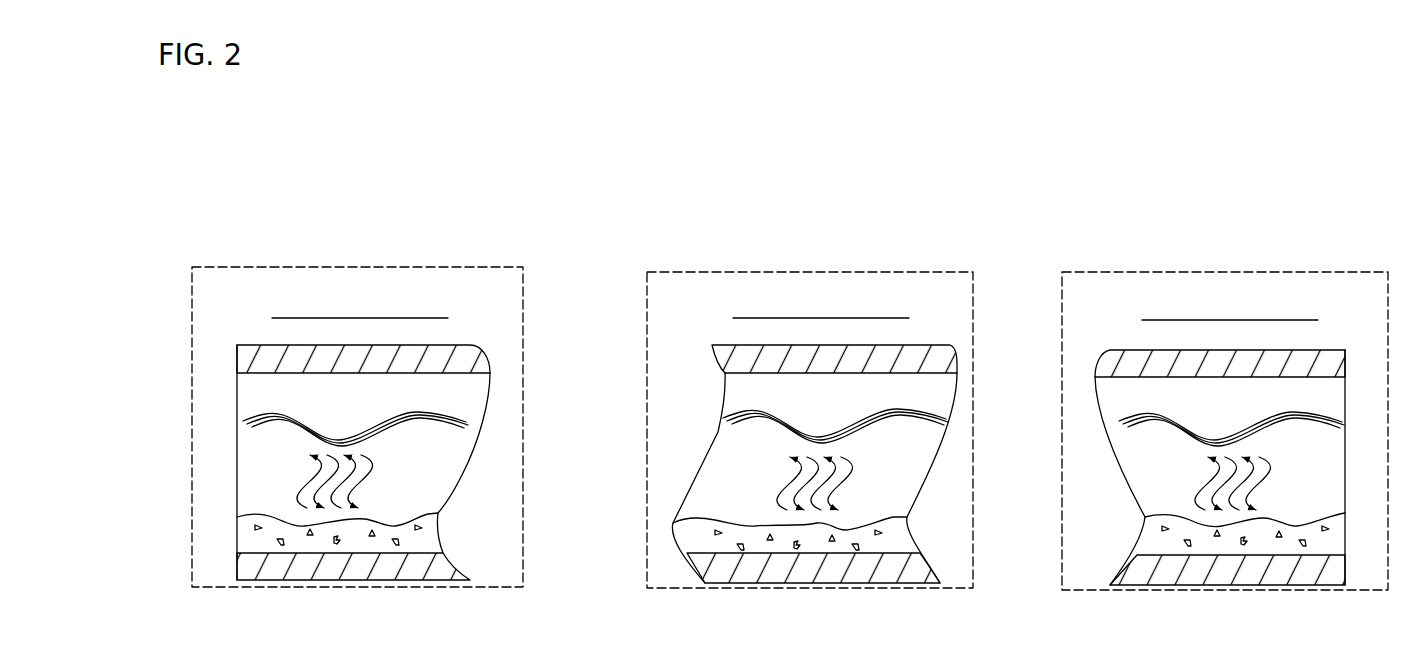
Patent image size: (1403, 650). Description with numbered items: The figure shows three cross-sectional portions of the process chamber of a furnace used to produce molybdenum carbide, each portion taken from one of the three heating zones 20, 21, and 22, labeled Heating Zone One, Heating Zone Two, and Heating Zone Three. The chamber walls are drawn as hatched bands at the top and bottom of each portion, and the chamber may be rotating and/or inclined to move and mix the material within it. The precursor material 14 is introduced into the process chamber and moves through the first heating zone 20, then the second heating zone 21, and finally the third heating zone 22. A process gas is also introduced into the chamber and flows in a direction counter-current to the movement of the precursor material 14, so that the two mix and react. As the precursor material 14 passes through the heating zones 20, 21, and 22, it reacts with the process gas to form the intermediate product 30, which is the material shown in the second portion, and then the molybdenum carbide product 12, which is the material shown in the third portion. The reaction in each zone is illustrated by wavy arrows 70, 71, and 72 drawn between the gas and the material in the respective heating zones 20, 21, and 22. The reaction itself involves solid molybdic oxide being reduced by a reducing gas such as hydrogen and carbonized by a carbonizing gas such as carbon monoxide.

The molybdenum carbide product 12 is at (1152, 527).
The precursor material 14 is at (262, 540).
The first heating zone 20 is at (237, 299).
The second heating zone 21 is at (688, 301).
The third heating zone 22 is at (1100, 300).
The intermediate product 30 is at (715, 534).
The reaction arrows in first heating zone 70 is at (362, 473).
The reaction arrows in second heating zone 71 is at (837, 490).
The reaction arrows in third heating zone 72 is at (1257, 490).